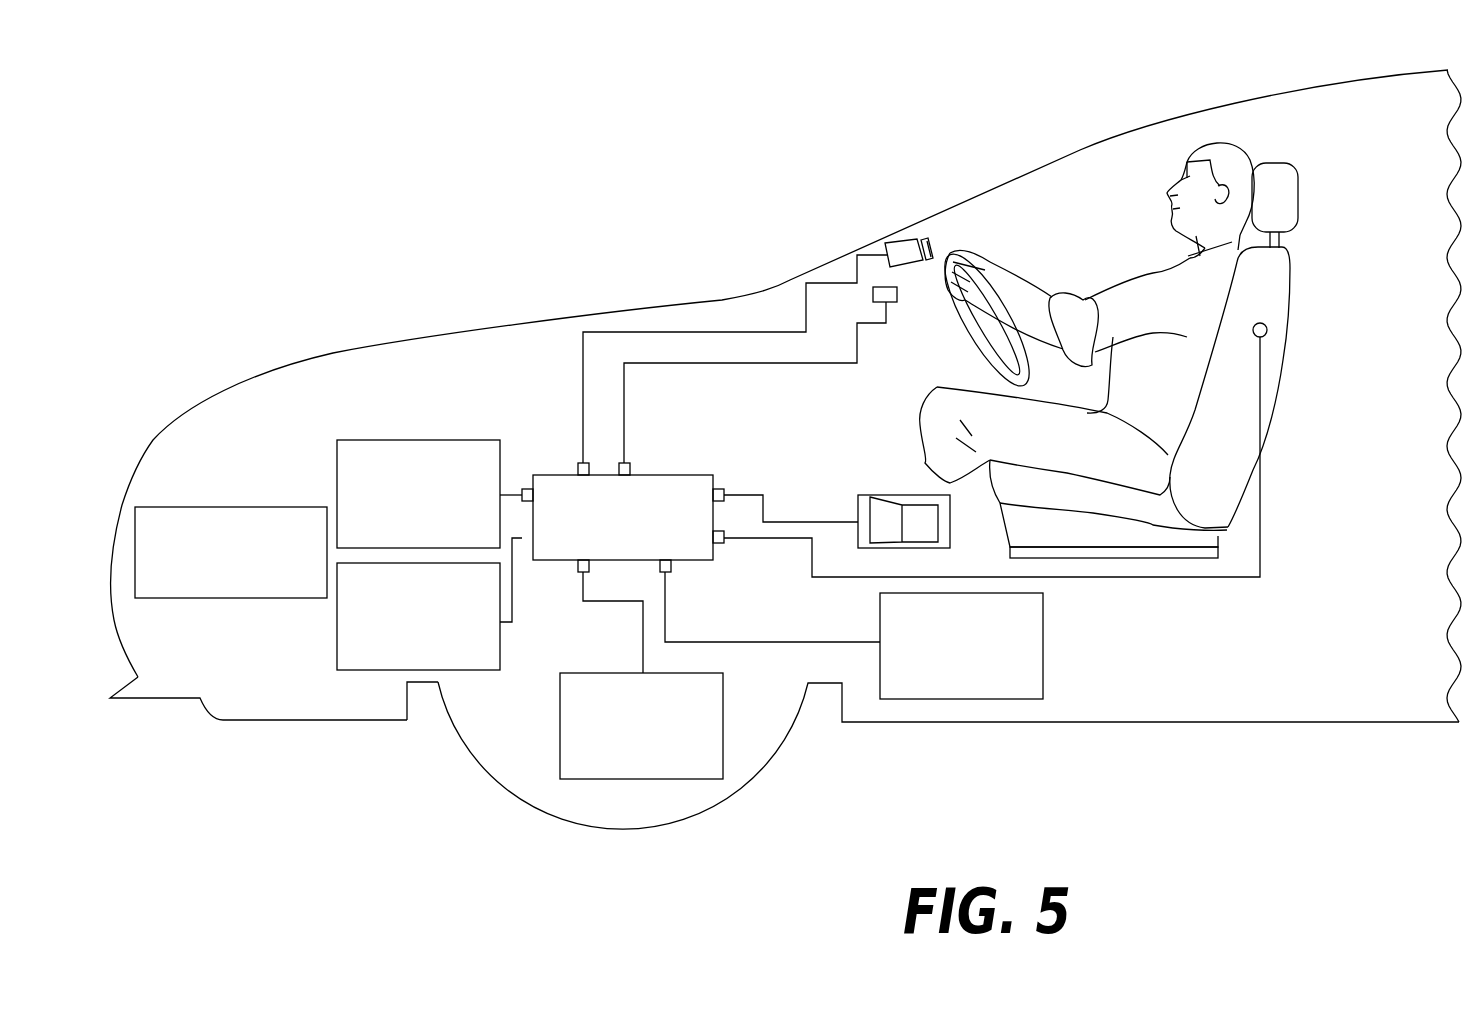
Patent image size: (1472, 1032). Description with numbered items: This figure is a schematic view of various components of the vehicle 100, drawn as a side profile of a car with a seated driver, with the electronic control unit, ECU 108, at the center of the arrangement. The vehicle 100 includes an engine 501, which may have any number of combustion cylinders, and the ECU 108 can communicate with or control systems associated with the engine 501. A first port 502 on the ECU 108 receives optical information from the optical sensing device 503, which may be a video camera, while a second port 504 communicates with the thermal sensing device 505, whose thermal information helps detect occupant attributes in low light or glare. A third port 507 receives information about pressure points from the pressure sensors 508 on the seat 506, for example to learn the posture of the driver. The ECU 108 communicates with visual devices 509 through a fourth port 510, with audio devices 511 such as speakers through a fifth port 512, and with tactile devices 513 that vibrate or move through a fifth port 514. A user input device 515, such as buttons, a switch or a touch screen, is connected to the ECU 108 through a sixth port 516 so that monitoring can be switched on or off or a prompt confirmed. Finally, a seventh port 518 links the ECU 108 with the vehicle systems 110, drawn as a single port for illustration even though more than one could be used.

The vehicle 100 is at (1283, 85).
The electronic control unit 108 is at (556, 474).
The vehicle systems 110 is at (947, 699).
The engine 501 is at (218, 598).
The first port 502 is at (580, 463).
The optical sensing device 503 is at (898, 240).
The second port 504 is at (630, 463).
The thermal sensing device 505 is at (890, 305).
The seat 506 is at (1238, 477).
The third port 507 is at (726, 545).
The pressure sensors 508 is at (1267, 331).
The visual devices 509 is at (397, 440).
The fourth port 510 is at (523, 489).
The audio devices 511 is at (387, 720).
The fifth port 512 is at (437, 683).
The tactile devices 513 is at (627, 779).
The fifth port 514 is at (580, 574).
The user input device 515 is at (880, 495).
The sixth port 516 is at (720, 489).
The seventh port 518 is at (672, 572).